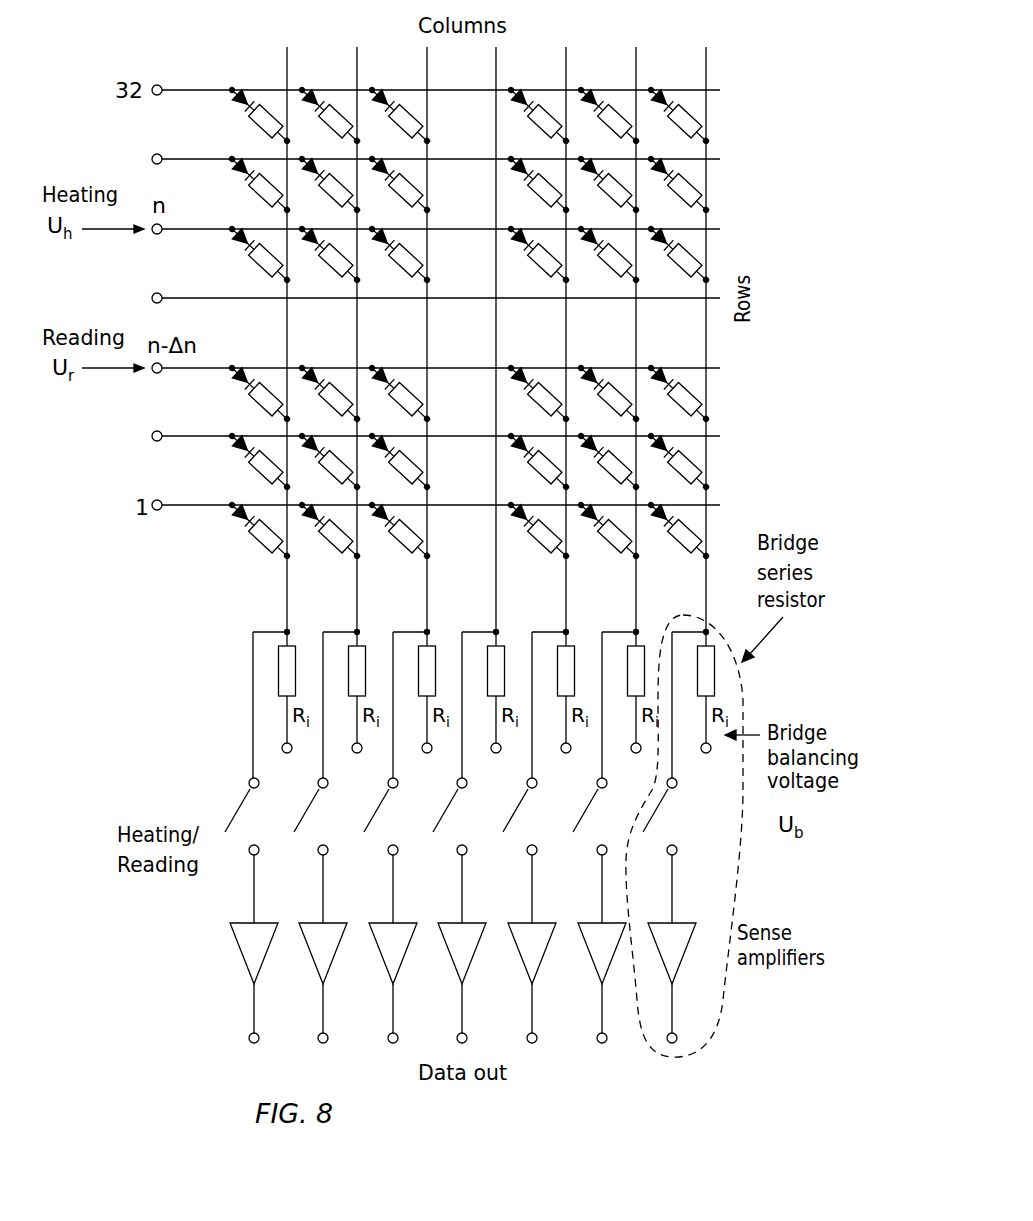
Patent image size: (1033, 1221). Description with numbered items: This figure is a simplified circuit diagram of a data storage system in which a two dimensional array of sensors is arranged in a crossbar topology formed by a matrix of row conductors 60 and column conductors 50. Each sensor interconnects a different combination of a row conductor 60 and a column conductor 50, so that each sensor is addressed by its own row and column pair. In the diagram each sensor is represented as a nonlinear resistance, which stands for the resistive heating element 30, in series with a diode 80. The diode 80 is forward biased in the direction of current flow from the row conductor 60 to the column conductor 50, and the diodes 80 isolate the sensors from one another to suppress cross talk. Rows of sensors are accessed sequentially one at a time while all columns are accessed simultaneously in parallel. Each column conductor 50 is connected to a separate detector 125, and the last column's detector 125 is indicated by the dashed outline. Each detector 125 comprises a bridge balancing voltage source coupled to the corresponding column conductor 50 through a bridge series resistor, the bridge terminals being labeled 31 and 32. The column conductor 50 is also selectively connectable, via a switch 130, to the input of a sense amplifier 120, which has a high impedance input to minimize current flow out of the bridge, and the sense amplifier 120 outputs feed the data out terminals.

The resistive heating element 30 is at (697, 118).
The diode 80 is at (662, 97).
The row conductor 60 is at (203, 88).
The column conductor 50 is at (707, 583).
The switch 130 is at (233, 815).
The sense amplifier 120 is at (245, 963).
The detector 125 is at (680, 1060).
The bridge terminal 31 is at (626, 707).
The bridge balancing voltage terminal 32 is at (698, 707).